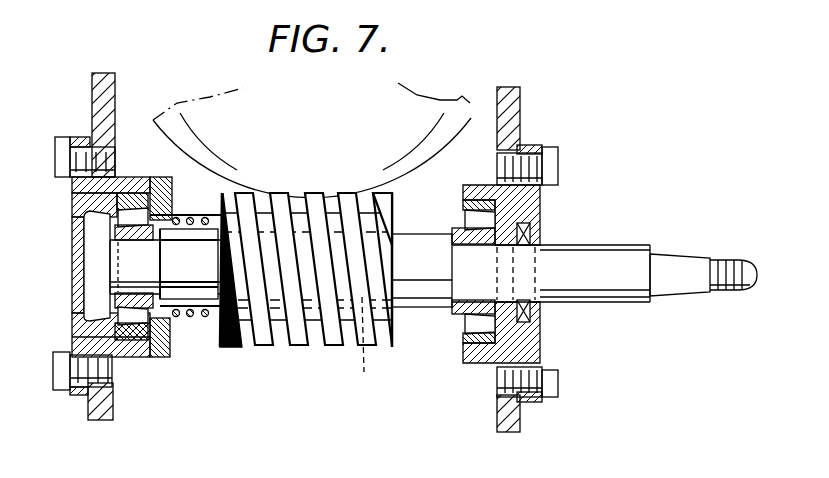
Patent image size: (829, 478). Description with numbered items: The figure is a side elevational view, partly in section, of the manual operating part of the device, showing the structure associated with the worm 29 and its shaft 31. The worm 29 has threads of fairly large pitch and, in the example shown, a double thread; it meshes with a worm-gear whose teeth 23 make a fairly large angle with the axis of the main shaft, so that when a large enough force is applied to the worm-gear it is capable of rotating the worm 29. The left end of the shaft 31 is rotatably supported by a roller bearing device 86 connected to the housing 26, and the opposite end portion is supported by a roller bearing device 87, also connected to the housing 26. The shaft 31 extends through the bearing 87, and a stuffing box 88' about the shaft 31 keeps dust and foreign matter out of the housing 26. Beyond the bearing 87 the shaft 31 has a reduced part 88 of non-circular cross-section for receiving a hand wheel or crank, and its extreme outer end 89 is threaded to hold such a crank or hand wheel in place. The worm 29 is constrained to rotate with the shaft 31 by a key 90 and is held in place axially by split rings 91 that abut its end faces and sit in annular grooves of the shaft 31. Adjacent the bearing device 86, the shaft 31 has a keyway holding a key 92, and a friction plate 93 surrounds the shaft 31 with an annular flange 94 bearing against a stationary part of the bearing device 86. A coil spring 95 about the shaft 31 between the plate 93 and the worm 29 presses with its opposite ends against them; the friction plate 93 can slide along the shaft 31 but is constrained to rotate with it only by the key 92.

The teeth 23 is at (407, 157).
The housing 26 is at (108, 103).
The worm 29 is at (262, 347).
The shaft 31 is at (568, 262).
The roller bearing device 86 is at (156, 176).
The roller bearing device 87 is at (458, 352).
The reduced part of non-circular cross-section 88 is at (680, 299).
The stuffing box 88' is at (555, 285).
The threaded outer end 89 is at (735, 262).
The key 90 is at (367, 345).
The split rings 91 is at (397, 228).
The key 92 is at (173, 318).
The friction plate 93 is at (171, 207).
The annular flange 94 is at (172, 185).
The coil spring 95 is at (187, 230).